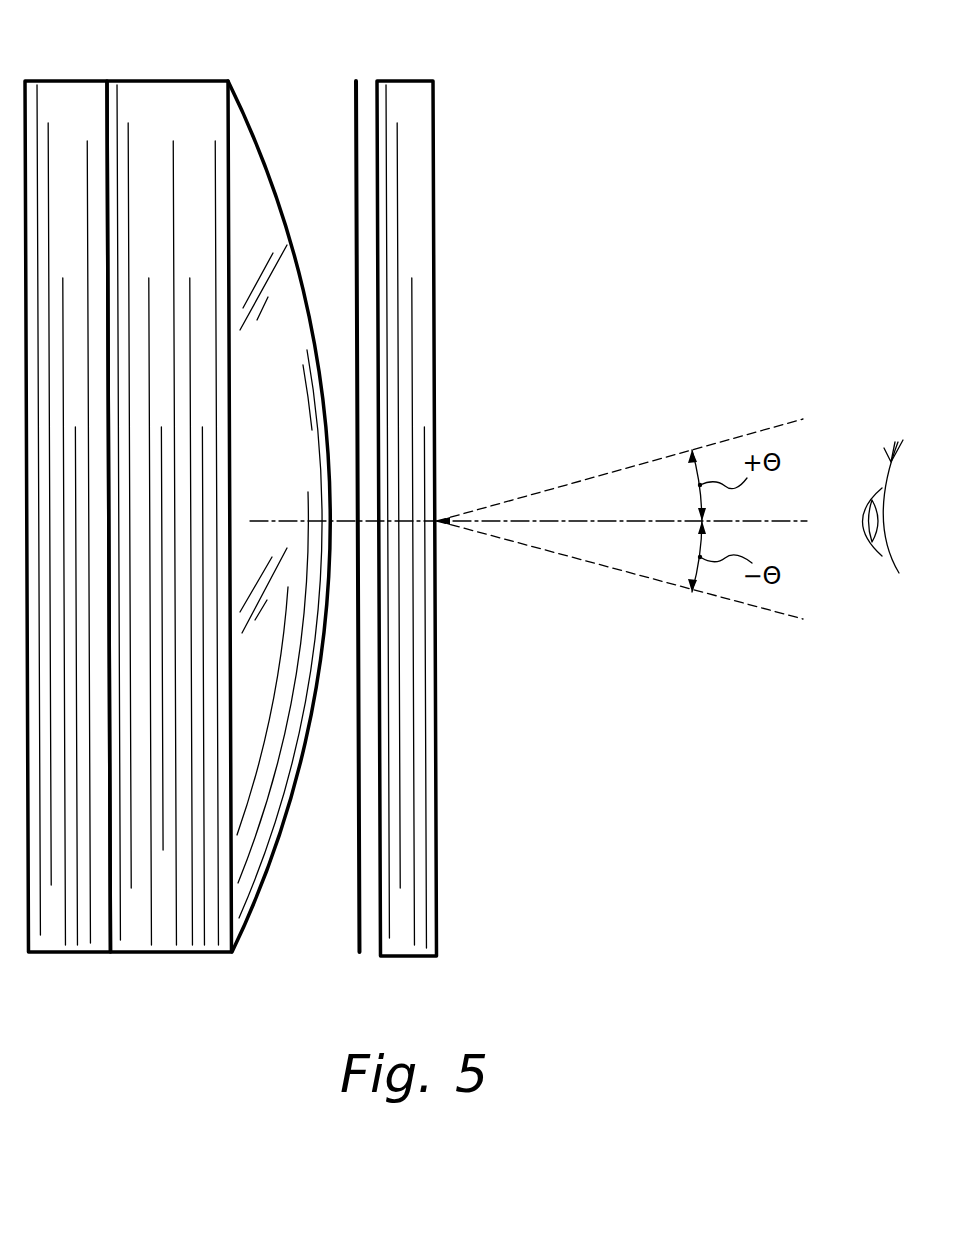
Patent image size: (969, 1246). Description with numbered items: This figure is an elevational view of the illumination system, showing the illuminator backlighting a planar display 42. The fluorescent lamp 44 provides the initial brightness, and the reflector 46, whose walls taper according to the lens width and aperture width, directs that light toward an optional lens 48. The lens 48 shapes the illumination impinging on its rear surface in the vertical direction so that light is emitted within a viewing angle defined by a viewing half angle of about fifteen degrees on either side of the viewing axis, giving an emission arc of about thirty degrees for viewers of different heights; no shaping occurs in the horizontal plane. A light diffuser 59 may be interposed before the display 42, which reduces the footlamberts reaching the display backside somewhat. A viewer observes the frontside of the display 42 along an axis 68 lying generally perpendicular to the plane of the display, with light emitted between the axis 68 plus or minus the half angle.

The display 42 is at (402, 97).
The fluorescent lamp 44 is at (67, 153).
The reflector 46 is at (150, 157).
The lens 48 is at (263, 375).
The light diffuser 59 is at (354, 132).
The axis 68 is at (790, 521).